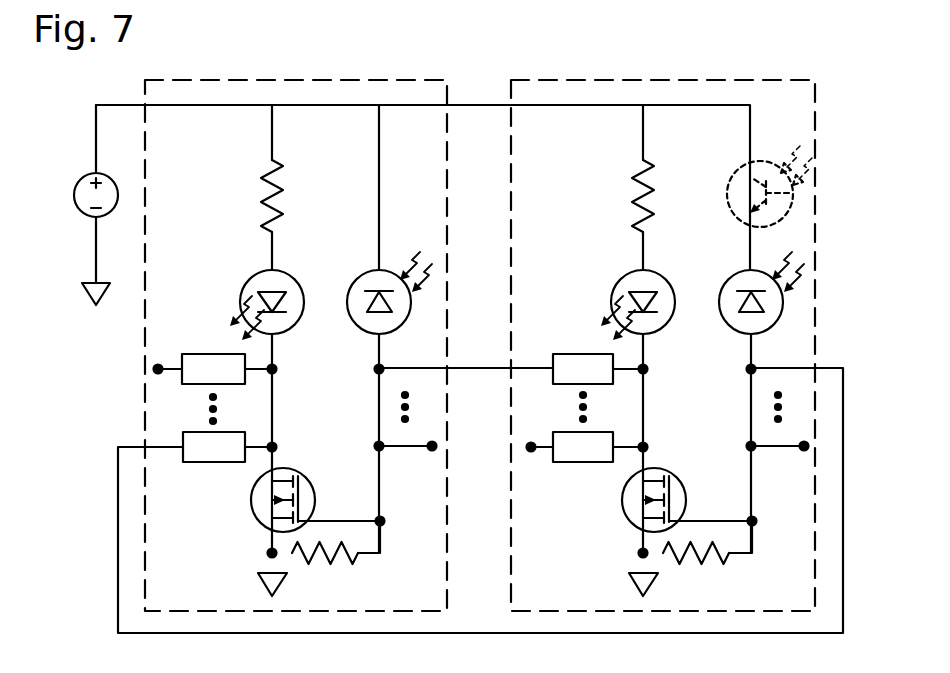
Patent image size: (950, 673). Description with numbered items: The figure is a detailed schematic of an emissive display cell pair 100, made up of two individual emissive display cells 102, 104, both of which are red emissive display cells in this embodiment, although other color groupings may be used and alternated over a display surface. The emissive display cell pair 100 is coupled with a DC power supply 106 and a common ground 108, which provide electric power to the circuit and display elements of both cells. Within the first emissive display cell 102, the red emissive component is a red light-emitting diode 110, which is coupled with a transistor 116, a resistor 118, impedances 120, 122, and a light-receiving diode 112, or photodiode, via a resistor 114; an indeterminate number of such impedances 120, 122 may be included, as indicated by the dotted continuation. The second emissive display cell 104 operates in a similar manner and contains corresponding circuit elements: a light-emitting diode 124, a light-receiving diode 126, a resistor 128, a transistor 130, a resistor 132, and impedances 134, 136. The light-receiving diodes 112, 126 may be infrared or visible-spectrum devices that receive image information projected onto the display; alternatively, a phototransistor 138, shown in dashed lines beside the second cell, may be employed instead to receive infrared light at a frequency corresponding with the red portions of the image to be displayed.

The emissive display cell pair 100 is at (760, 54).
The emissive display cell 102 is at (190, 76).
The emissive display cell 104 is at (557, 76).
The DC power supply 106 is at (80, 213).
The common ground 108 is at (90, 298).
The light-emitting diode 110 is at (245, 280).
The light-receiving diode 112 is at (352, 284).
The resistor 114 is at (262, 182).
The transistor 116 is at (292, 470).
The resistor 118 is at (338, 562).
The impedance 120 is at (200, 463).
The impedance 122 is at (193, 352).
The light-emitting diode 124 is at (616, 280).
The light-receiving diode 126 is at (722, 284).
The resistor 128 is at (633, 182).
The transistor 130 is at (663, 470).
The resistor 132 is at (705, 562).
The impedance 134 is at (566, 463).
The impedance 136 is at (565, 352).
The phototransistor 138 is at (727, 193).